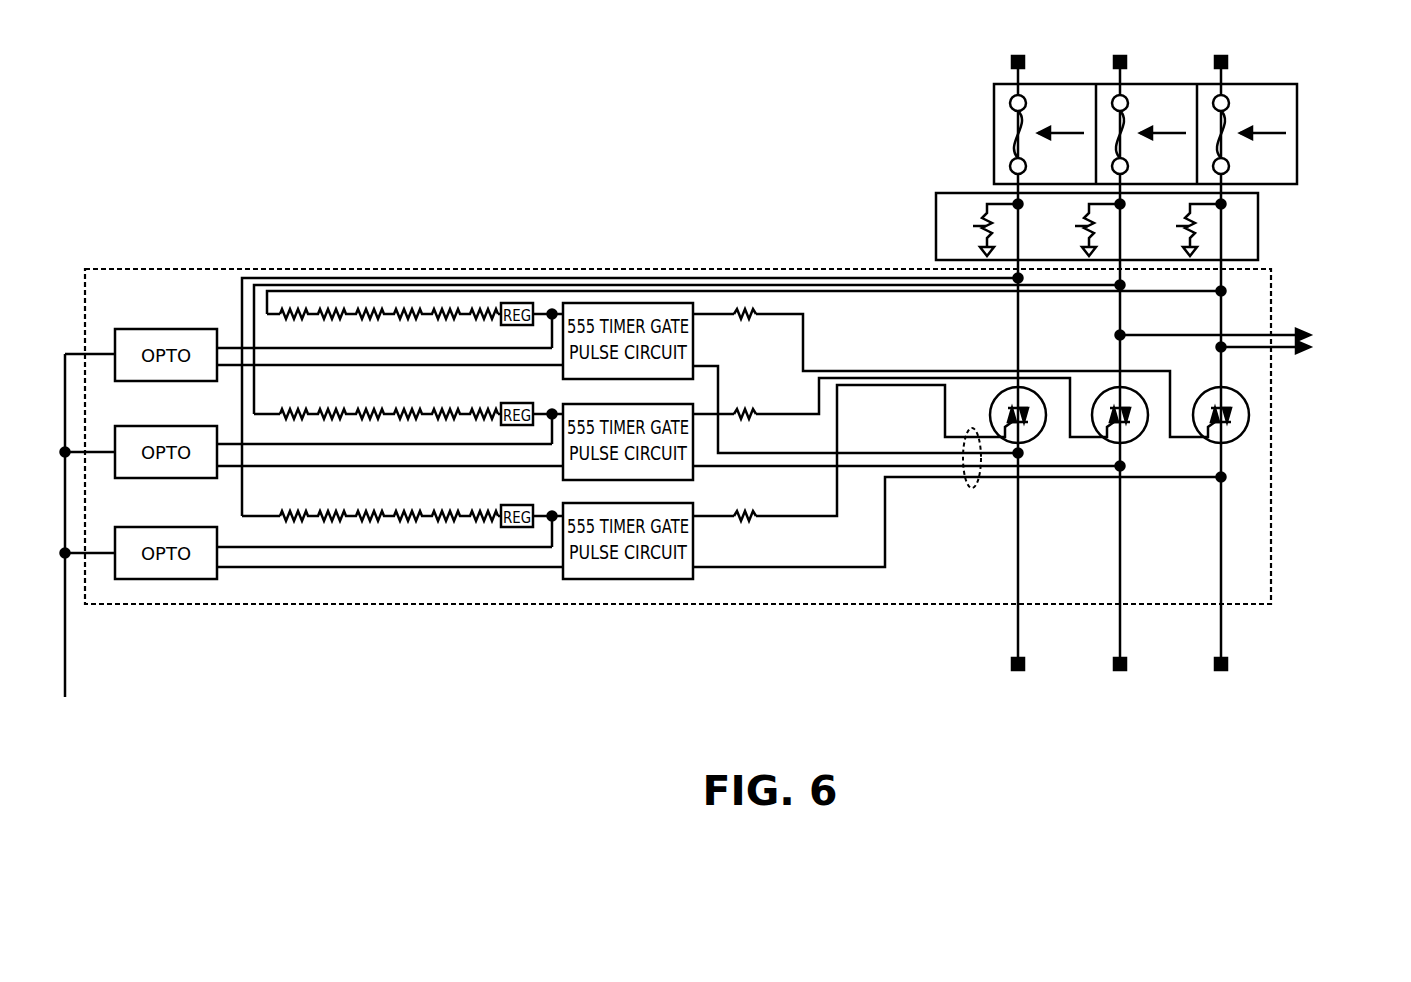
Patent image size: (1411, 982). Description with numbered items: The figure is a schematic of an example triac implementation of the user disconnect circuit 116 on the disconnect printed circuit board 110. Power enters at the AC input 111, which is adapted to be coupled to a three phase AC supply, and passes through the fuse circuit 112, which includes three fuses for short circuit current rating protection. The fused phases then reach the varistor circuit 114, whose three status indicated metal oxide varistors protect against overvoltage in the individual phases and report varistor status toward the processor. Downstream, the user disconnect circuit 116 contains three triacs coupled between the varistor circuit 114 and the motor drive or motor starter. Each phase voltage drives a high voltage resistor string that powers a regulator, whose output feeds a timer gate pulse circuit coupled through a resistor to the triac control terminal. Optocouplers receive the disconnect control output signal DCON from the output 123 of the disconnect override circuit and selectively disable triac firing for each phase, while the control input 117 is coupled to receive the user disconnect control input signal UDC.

The disconnect printed circuit board 110 is at (252, 82).
The AC input 111 is at (995, 46).
The fuse circuit 112 is at (994, 106).
The varistor circuit 114 is at (936, 207).
The user disconnect circuit 116 is at (85, 281).
The control input 117 is at (972, 488).
The output 123 is at (65, 660).